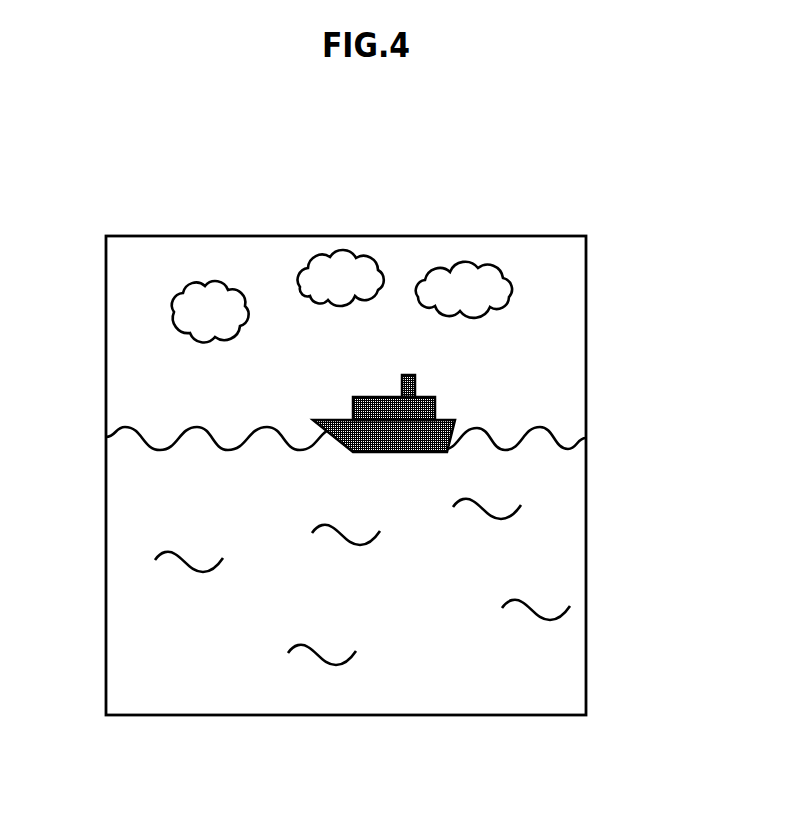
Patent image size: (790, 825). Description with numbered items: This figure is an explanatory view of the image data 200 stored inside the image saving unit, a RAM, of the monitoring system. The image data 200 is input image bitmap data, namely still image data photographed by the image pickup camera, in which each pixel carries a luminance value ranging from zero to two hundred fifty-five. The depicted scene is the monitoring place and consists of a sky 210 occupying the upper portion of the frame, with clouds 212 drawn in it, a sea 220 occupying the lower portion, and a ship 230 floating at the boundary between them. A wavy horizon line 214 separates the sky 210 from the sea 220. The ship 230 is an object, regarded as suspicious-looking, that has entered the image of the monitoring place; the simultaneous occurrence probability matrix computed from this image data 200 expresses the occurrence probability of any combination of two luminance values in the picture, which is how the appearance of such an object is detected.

The image data 200 is at (345, 236).
The sky 210 is at (355, 296).
The clouds 212 is at (173, 306).
The horizon wave line 214 is at (548, 428).
The sea 220 is at (567, 538).
The ship 230 is at (436, 405).